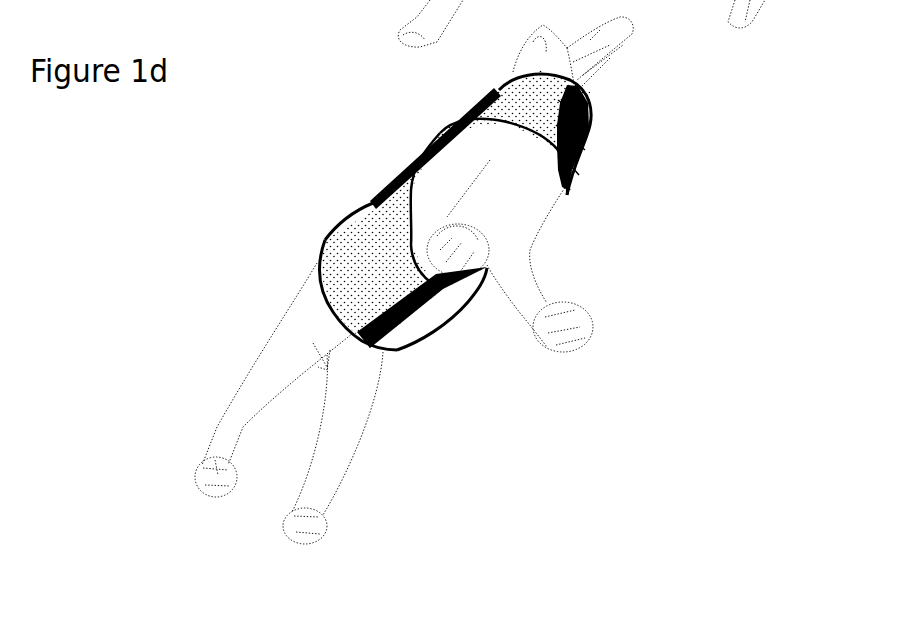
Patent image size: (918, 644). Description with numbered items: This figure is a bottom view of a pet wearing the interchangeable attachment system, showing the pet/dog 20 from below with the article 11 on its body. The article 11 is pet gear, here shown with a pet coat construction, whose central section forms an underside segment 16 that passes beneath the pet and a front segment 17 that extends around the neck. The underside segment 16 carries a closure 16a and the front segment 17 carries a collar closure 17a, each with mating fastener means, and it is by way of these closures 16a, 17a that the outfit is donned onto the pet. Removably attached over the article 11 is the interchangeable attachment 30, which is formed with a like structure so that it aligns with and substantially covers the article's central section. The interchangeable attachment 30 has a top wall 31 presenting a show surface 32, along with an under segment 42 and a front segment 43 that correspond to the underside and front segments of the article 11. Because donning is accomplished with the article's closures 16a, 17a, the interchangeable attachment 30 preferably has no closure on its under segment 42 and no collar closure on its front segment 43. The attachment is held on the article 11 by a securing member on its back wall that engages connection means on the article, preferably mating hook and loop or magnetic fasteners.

The article 11 is at (490, 108).
The underside segment 16 is at (360, 345).
The closure 16a is at (383, 330).
The front segment 17 is at (576, 112).
The collar closure 17a is at (587, 123).
The pet/dog 20 is at (447, 341).
The interchangeable attachment 30 is at (590, 153).
The top wall 31 is at (373, 303).
The show surface 32 is at (388, 263).
The under segment 42 is at (425, 322).
The front segment 43 is at (538, 107).